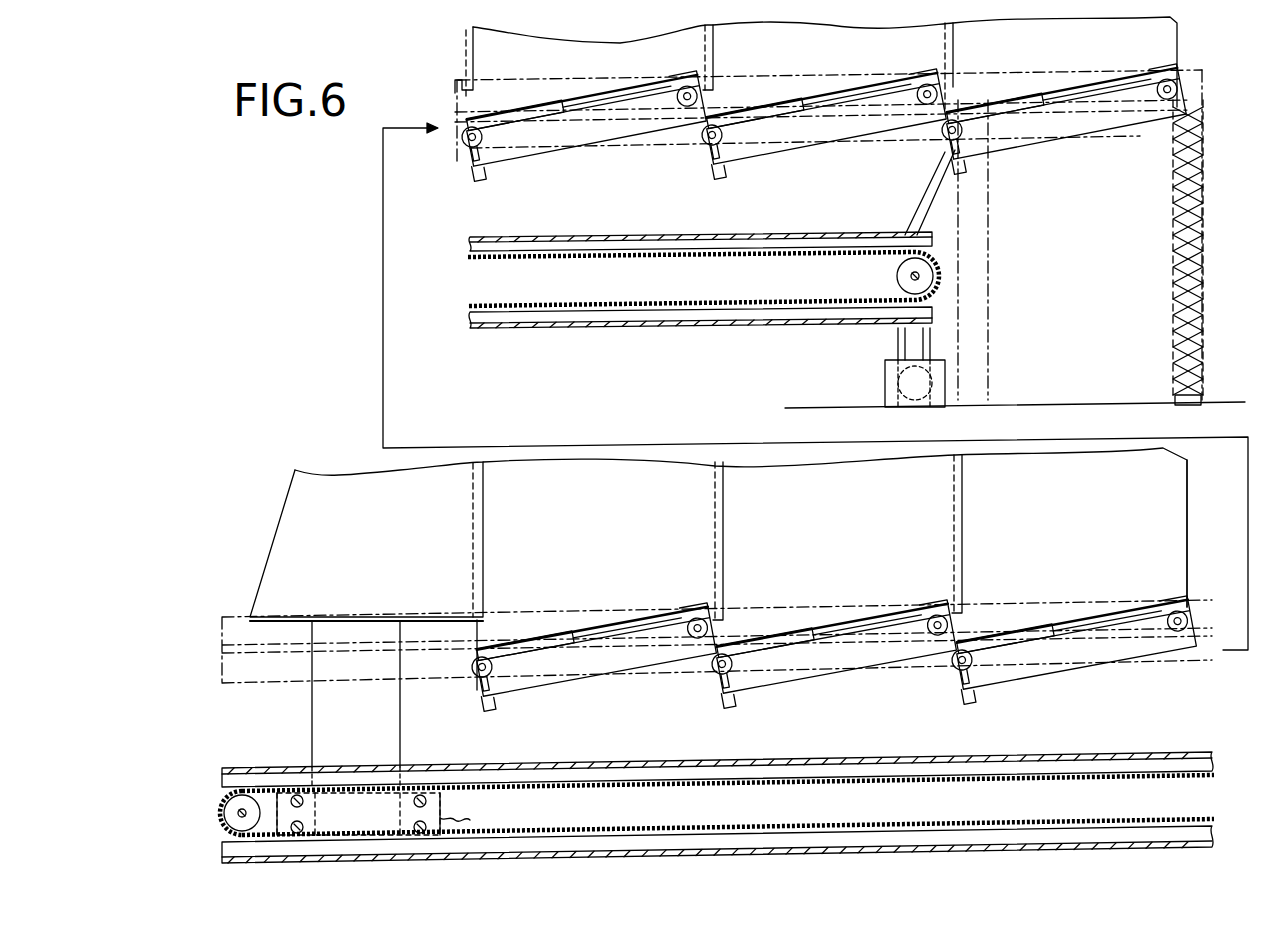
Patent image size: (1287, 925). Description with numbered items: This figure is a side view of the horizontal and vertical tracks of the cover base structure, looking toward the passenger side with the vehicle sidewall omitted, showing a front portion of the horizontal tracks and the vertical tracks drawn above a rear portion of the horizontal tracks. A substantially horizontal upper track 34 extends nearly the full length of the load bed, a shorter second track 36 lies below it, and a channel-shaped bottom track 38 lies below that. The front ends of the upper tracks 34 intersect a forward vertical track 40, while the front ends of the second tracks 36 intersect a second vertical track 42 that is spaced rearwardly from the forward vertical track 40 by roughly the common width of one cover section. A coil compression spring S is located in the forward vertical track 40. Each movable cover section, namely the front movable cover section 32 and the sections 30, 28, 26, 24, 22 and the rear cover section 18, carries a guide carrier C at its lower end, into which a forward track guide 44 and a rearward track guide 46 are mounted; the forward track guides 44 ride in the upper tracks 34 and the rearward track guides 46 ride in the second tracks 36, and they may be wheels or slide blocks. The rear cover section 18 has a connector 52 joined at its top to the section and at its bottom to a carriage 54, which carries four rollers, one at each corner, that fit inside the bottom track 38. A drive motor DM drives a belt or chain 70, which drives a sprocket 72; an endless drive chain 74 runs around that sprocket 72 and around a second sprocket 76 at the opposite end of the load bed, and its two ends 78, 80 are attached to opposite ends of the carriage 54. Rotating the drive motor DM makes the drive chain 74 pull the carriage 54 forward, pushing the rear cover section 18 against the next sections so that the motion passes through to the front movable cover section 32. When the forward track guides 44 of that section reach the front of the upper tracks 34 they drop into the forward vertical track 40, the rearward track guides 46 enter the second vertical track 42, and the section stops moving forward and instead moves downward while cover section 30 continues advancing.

The rear cover section 18 is at (366, 537).
The movable cover section 22 is at (592, 542).
The movable cover section 24 is at (841, 530).
The movable cover section 26 is at (1066, 527).
The movable cover section 28 is at (501, 62).
The movable cover section 30 is at (819, 62).
The front movable cover section 32 is at (999, 54).
The upper track 34 is at (750, 88).
The second track 36 is at (590, 115).
The bottom track 38 is at (658, 328).
The forward vertical track 40 is at (1168, 158).
The second vertical track 42 is at (1005, 284).
The forward track guide 44 is at (692, 82).
The rearward track guide 46 is at (462, 143).
The connector 52 is at (346, 717).
The carriage 54 is at (452, 792).
The belt or chain 70 is at (935, 343).
The sprocket 72 is at (895, 278).
The endless drive chain 74 is at (582, 303).
The second sprocket 76 is at (246, 800).
The chain end 78 is at (272, 800).
The chain end 80 is at (467, 818).
The guide carrier C is at (580, 128).
The coil compression spring S is at (1178, 262).
The drive motor DM is at (885, 372).